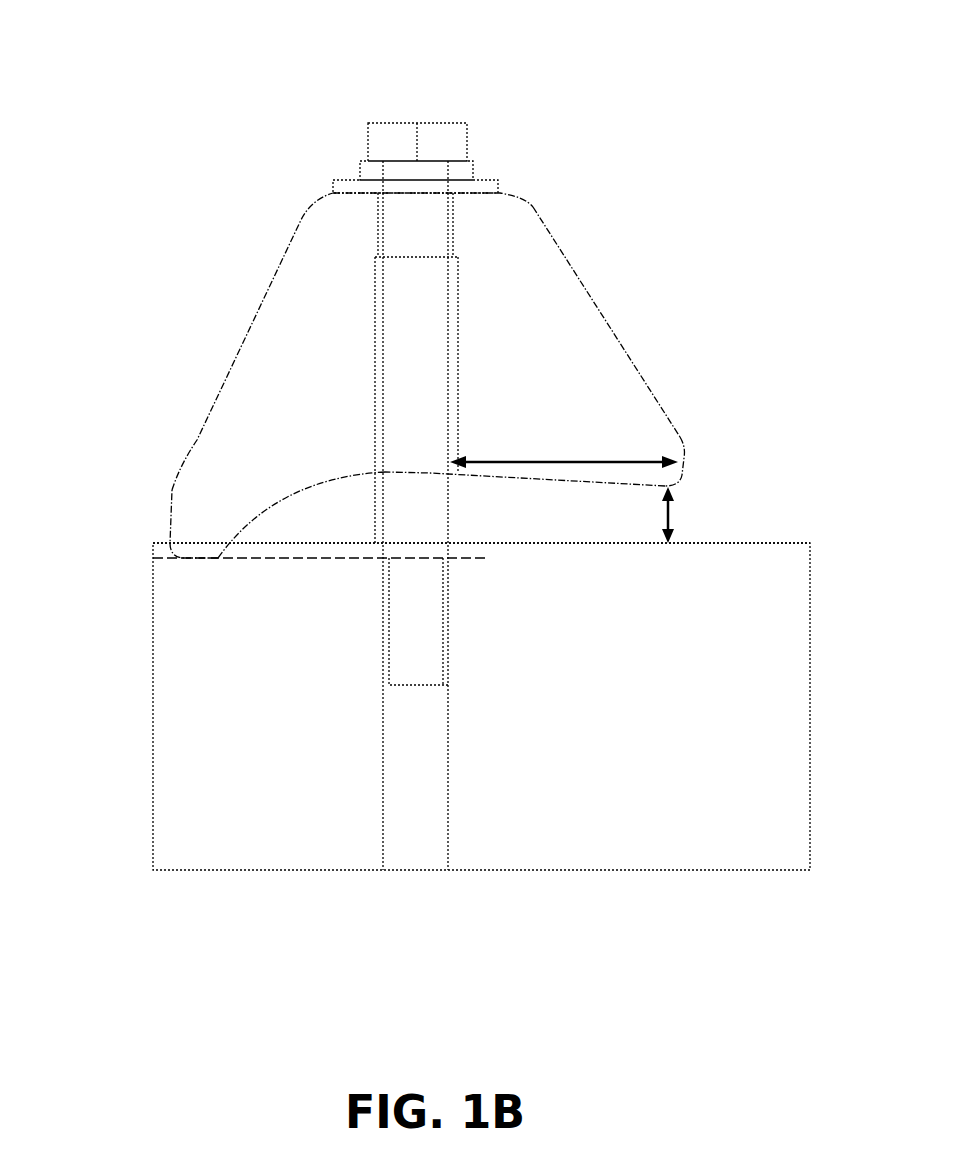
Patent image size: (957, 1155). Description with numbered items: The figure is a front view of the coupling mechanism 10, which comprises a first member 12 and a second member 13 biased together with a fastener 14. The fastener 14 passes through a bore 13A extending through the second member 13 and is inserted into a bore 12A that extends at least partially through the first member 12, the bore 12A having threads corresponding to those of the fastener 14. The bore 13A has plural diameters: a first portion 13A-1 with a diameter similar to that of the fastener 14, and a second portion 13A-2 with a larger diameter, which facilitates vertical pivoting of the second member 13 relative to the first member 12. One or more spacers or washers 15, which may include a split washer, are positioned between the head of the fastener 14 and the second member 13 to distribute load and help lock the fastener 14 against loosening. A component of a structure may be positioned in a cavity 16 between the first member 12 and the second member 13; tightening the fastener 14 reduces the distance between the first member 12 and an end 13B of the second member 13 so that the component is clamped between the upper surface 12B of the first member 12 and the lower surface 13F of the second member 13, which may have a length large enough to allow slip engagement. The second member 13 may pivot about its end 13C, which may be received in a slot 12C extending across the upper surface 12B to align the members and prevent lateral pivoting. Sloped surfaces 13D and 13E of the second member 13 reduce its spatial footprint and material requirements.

The coupling mechanism 10 is at (208, 84).
The first member 12 is at (757, 654).
The bore 12A is at (443, 753).
The upper surface 12B is at (765, 543).
The slot 12C is at (307, 558).
The second member 13 is at (527, 248).
The bore 13A is at (457, 345).
The first portion 13A-1 is at (370, 258).
The second portion 13A-2 is at (370, 262).
The end 13B is at (680, 458).
The end 13C is at (170, 536).
The sloped surface 13D is at (617, 326).
The sloped surface 13E is at (240, 343).
The lower surface 13F is at (503, 475).
The fastener 14 is at (398, 138).
The spacers or washers 15 is at (460, 172).
The cavity 16 is at (575, 519).